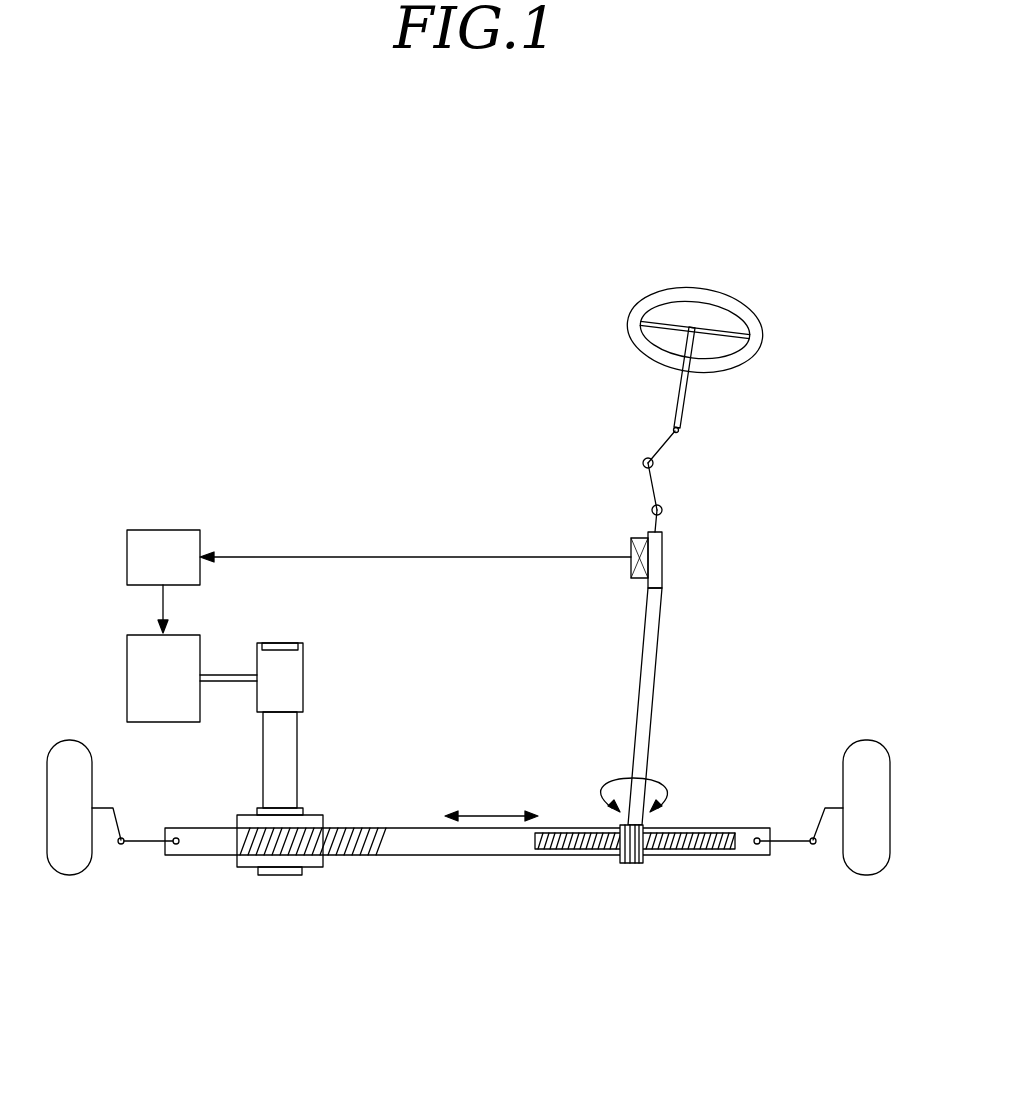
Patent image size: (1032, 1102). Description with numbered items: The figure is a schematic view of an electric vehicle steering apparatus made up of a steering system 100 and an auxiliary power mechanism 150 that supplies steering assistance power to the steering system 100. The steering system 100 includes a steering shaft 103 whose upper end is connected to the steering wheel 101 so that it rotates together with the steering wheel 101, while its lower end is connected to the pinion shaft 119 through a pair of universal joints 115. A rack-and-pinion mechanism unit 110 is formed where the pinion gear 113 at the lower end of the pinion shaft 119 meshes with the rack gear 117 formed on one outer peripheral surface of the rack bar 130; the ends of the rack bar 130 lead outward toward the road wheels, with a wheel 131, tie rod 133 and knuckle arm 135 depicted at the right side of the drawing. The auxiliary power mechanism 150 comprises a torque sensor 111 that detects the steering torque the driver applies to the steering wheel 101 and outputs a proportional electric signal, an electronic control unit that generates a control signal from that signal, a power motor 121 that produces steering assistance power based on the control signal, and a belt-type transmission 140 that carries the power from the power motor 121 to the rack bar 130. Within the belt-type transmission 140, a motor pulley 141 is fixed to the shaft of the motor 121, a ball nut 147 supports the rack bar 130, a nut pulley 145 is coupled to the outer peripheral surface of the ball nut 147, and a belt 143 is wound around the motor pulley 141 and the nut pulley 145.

The steering system 100 is at (554, 466).
The steering wheel 101 is at (670, 292).
The steering shaft 103 is at (692, 398).
The rack-and-pinion mechanism unit 110 is at (637, 912).
The torque sensor 111 is at (631, 545).
The pinion gear 113 is at (636, 885).
The universal joints 115 is at (663, 510).
The rack gear 117 is at (695, 851).
The pinion shaft 119 is at (645, 676).
The power motor 121 is at (140, 693).
The rack bar 130 is at (398, 830).
The wheel 131 is at (865, 757).
The tie rod 133 is at (797, 838).
The knuckle arm 135 is at (837, 807).
The belt-type transmission 140 is at (320, 636).
The motor pulley 141 is at (290, 680).
The belt 143 is at (290, 748).
The nut pulley 145 is at (253, 812).
The ball nut 147 is at (250, 867).
The auxiliary power mechanism 150 is at (288, 520).